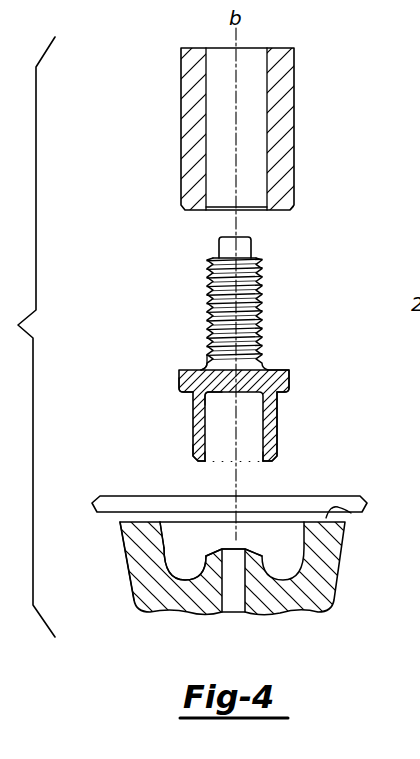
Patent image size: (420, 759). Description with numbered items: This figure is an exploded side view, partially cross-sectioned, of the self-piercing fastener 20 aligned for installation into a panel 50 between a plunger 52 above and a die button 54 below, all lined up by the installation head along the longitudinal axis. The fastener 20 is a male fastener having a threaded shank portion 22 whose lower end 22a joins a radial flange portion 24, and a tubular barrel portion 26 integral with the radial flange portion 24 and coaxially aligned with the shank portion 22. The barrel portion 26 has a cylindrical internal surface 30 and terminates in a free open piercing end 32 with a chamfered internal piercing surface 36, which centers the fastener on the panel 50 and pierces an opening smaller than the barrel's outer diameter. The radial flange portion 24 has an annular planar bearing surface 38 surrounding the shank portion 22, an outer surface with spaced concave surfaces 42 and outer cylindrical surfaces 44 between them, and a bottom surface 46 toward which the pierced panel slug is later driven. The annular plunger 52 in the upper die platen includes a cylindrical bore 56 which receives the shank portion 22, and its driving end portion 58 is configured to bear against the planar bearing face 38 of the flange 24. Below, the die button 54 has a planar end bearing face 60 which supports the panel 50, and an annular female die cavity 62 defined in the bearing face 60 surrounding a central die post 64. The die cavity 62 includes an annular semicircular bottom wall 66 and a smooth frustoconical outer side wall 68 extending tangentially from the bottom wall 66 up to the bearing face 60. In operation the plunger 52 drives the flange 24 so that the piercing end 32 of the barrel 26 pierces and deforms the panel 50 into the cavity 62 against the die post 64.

The self-piercing fastener 20 is at (308, 399).
The shank portion 22 is at (248, 288).
The lower end of stud 22a is at (204, 362).
The radial flange portion 24 is at (179, 376).
The tubular barrel portion 26 is at (277, 421).
The cylindrical internal surface 30 is at (240, 438).
The free open piercing end 32 is at (195, 458).
The chamfered internal piercing surface 36 is at (221, 461).
The annular planar bearing surface 38 is at (266, 368).
The concave surfaces 42 is at (184, 390).
The outer cylindrical surfaces 44 is at (419, 365).
The bottom surface of the radial flange portion 46 is at (213, 392).
The panel 50 is at (281, 503).
The plunger 52 is at (286, 103).
The die button 54 is at (320, 575).
The cylindrical bore 56 is at (267, 125).
The driving end portion 58 is at (276, 211).
The planar end bearing face 60 is at (352, 514).
The annular female die cavity 62 is at (178, 561).
The central die post 64 is at (266, 561).
The annular semicircular bottom wall 66 is at (181, 575).
The frustoconical outer side wall 68 is at (172, 534).